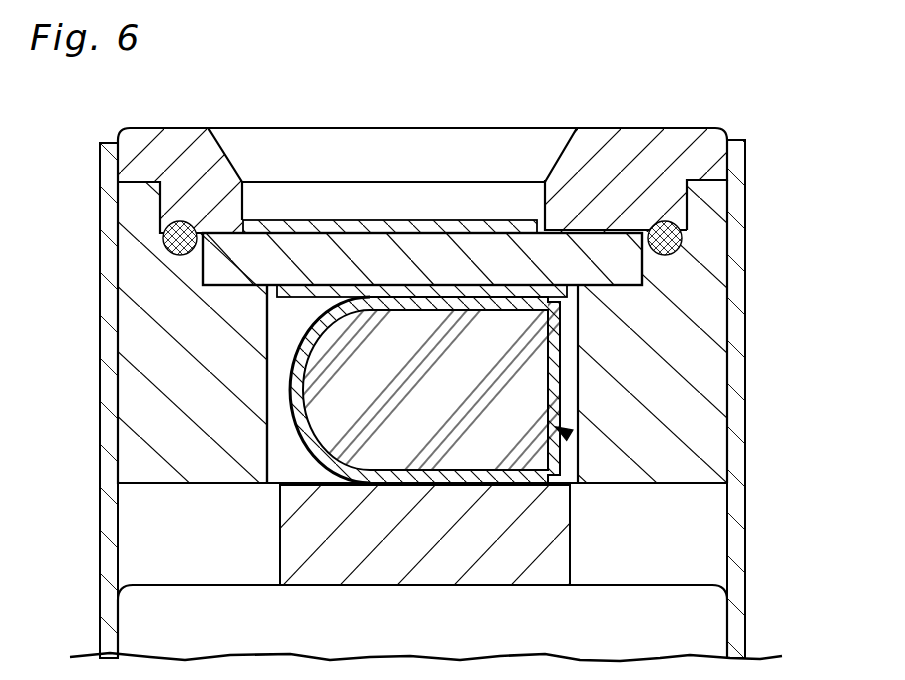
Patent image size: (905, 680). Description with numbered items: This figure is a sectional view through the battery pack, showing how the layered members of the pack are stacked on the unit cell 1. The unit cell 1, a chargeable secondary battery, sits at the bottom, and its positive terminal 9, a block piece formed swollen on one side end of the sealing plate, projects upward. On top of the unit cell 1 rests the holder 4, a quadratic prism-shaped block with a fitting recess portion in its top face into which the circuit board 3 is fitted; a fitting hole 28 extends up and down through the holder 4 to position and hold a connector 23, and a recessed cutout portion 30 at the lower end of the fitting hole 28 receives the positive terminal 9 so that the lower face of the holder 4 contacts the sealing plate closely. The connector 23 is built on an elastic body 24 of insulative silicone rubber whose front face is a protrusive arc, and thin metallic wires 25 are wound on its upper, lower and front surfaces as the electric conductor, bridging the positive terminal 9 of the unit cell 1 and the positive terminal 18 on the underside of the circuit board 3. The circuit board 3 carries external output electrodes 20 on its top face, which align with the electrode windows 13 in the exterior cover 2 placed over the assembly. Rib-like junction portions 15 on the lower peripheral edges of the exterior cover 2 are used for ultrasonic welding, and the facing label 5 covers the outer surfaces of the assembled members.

The unit cell 1 is at (158, 628).
The exterior cover 2 is at (641, 128).
The circuit board 3 is at (303, 247).
The holder 4 is at (460, 335).
The facing label 5 is at (98, 395).
The positive terminal 9 is at (278, 550).
The electrode window 13 is at (462, 157).
The rib-like junction portion 15 is at (167, 222).
The positive terminal 18 is at (303, 297).
The external output electrode 20 is at (397, 225).
The connector 23 is at (568, 436).
The elastic body 24 is at (364, 390).
The thin metallic wire 25 is at (293, 370).
The fitting hole 28 is at (297, 465).
The recessed cutout portion 30 is at (647, 482).